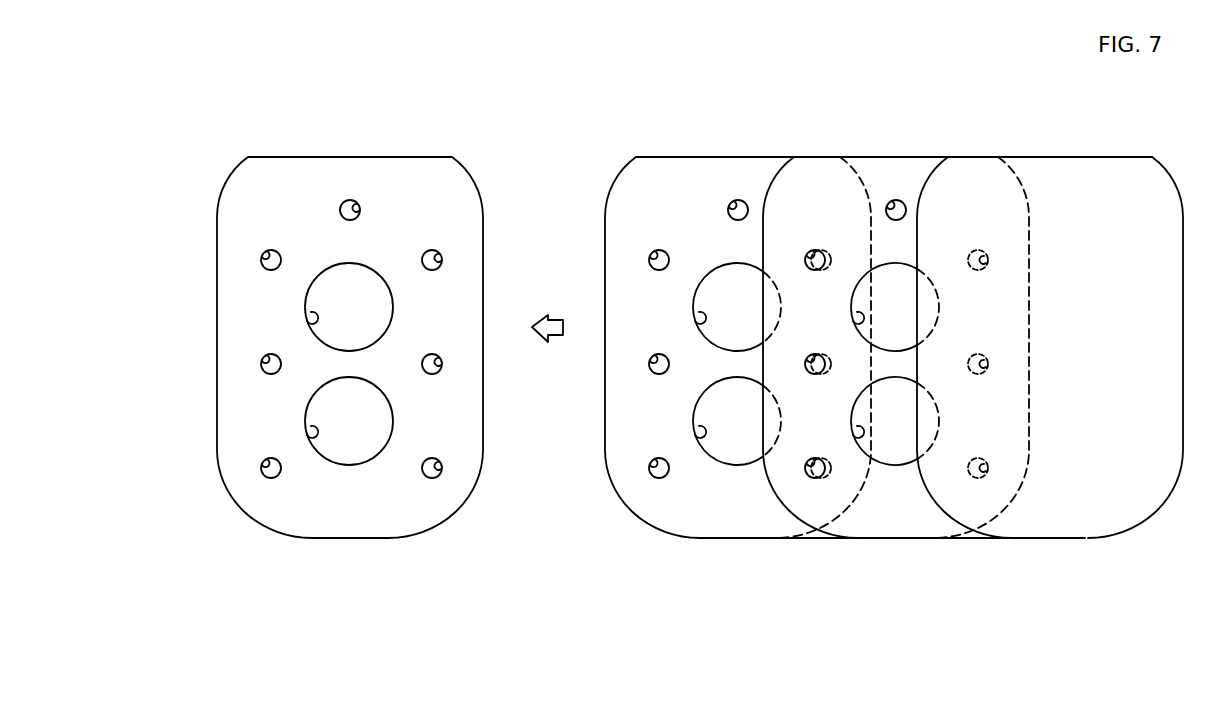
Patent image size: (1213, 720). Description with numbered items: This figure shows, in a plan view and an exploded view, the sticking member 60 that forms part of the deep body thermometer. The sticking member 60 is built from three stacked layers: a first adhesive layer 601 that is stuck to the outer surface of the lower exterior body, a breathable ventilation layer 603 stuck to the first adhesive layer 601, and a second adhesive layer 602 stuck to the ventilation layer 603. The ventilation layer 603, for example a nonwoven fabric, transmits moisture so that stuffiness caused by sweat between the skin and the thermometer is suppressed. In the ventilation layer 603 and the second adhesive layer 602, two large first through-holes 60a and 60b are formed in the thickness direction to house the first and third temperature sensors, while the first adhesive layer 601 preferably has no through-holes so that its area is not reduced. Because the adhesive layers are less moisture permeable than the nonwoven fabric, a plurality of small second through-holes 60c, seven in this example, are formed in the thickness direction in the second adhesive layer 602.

The sticking member 60 is at (223, 402).
The first through-hole 60a is at (307, 321).
The first through-hole 60b is at (307, 435).
The second through-hole 60c is at (261, 259).
The first adhesive layer 601 is at (1053, 528).
The second adhesive layer 602 is at (737, 528).
The ventilation layer 603 is at (895, 528).